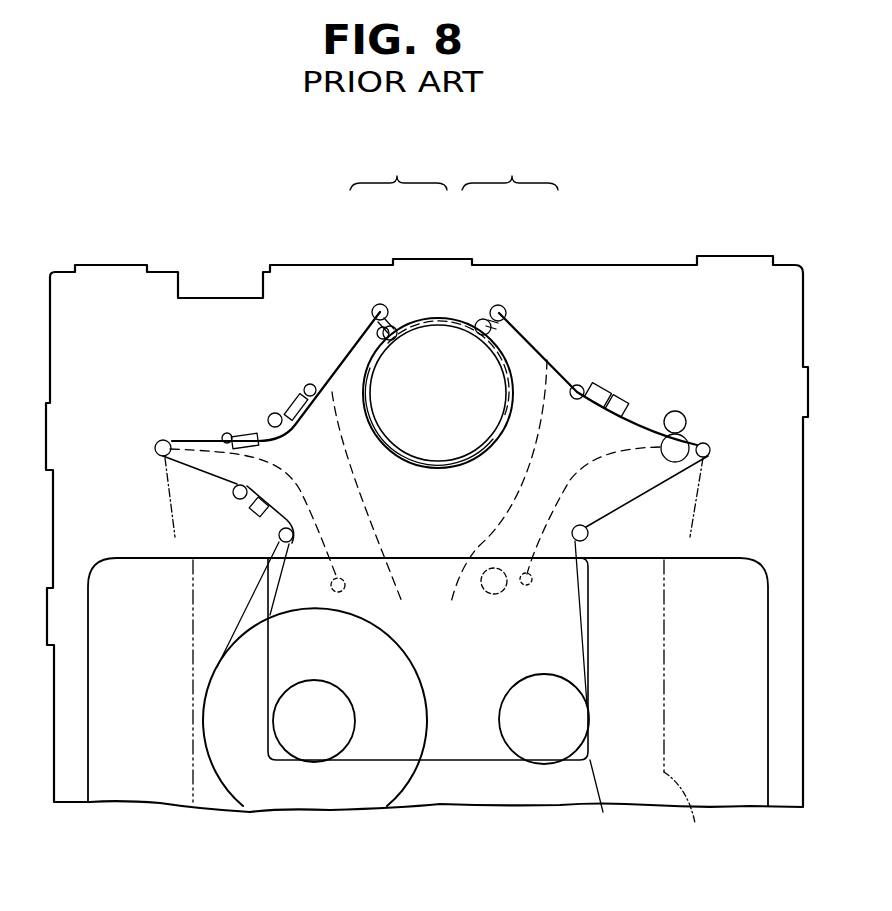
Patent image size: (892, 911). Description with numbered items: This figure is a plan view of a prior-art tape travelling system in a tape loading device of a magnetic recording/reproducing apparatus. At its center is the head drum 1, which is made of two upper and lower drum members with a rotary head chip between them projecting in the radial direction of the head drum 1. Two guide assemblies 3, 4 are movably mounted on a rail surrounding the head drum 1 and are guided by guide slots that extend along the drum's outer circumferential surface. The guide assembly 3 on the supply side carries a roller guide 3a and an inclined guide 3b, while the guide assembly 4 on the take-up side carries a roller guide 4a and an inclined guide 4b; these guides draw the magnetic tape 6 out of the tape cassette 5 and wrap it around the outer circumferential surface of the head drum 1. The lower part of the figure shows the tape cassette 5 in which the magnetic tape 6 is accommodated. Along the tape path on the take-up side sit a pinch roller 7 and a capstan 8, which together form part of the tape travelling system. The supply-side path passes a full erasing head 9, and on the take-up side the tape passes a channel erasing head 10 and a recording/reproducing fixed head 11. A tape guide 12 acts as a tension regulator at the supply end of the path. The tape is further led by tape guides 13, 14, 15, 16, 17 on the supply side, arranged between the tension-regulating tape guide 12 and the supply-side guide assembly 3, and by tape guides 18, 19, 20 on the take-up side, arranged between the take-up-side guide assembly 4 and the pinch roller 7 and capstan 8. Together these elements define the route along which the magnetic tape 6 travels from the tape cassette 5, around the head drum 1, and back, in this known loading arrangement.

The head drum 1 is at (433, 447).
The guide assembly 3 is at (398, 240).
The roller guide 3a is at (378, 303).
The inclined guide 3b is at (396, 327).
The guide assembly 4 is at (510, 238).
The roller guide 4a is at (502, 305).
The inclined guide 4b is at (483, 319).
The tape cassette 5 is at (757, 637).
The magnetic tape 6 is at (559, 370).
The pinch roller 7 is at (686, 440).
The capstan 8 is at (679, 413).
The full erasing head 9 is at (251, 514).
The channel erasing head 10 is at (603, 387).
The recording/reproducing fixed head 11 is at (624, 399).
The tape guide 12 is at (158, 441).
The tape guide 13 is at (262, 559).
The tape guide 14 is at (233, 491).
The tape guide 15 is at (226, 433).
The tape guide 16 is at (273, 413).
The tape guide 17 is at (309, 384).
The tape guide 18 is at (589, 532).
The tape guide 19 is at (711, 449).
The tape guide 20 is at (575, 399).